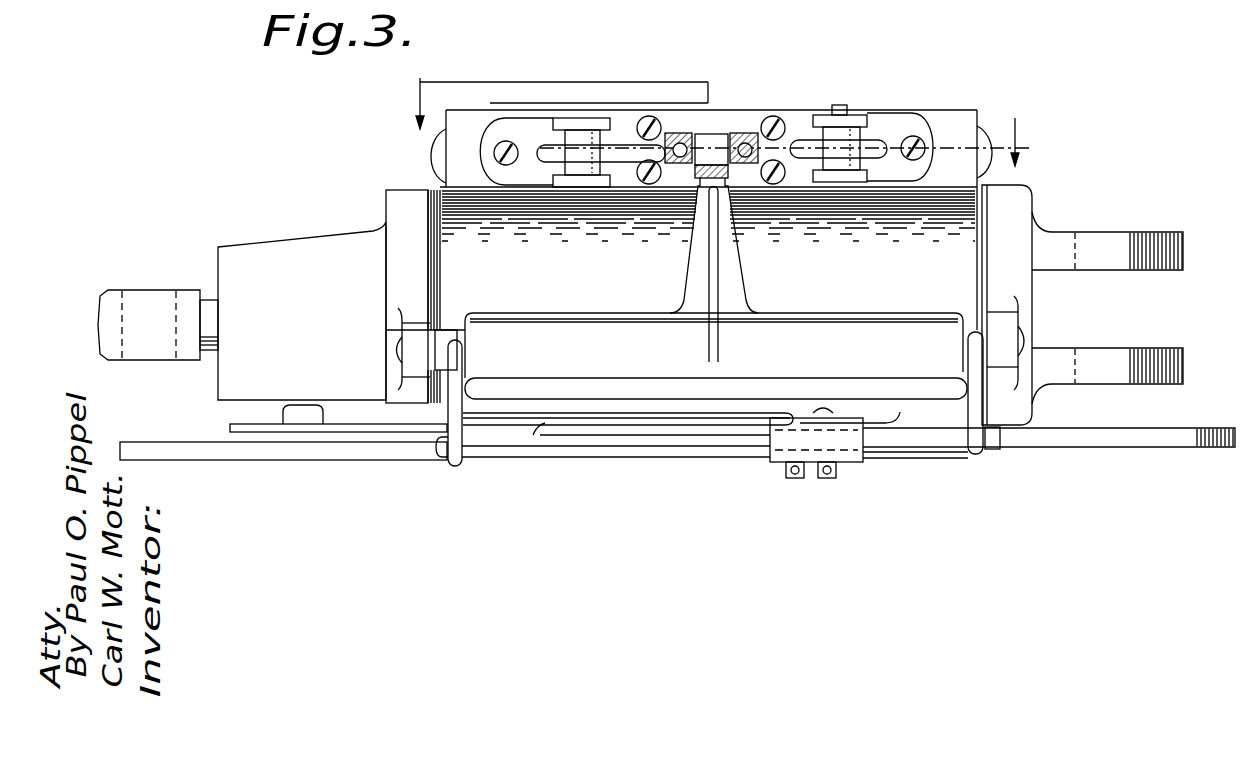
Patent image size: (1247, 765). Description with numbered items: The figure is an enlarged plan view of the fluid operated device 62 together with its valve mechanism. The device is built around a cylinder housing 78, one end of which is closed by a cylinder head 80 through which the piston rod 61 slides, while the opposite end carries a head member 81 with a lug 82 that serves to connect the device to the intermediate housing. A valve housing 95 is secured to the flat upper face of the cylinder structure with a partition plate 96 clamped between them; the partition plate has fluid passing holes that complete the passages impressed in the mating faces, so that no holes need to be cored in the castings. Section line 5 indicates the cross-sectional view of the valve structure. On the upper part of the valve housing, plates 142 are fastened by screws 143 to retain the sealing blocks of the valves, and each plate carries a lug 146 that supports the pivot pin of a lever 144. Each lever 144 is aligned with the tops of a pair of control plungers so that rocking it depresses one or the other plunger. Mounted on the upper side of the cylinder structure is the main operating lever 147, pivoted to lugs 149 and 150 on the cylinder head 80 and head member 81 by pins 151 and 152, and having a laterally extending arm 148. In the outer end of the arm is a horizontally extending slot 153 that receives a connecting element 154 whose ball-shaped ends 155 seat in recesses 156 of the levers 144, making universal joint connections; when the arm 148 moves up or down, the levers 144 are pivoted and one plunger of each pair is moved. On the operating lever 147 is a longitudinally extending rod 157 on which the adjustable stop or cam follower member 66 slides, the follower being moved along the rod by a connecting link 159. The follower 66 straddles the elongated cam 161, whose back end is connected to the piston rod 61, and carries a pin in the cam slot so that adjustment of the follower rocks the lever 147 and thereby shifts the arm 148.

The section line 5- 5 is at (717, 114).
The piston rod 61 is at (210, 295).
The fluid operated device 62 is at (242, 288).
The adjustable stop or cam follower member 66 is at (848, 462).
The cylinder housing 78 is at (473, 190).
The cylinder head 80 is at (308, 250).
The head member 81 is at (1034, 206).
The lug 82 is at (1147, 347).
The valve housing 95 is at (957, 107).
The partition plate 96 is at (487, 194).
The plate 142 is at (530, 121).
The screw 143 is at (505, 141).
The lever 144 is at (630, 140).
The lug 146 is at (583, 127).
The main operating lever 147 is at (808, 320).
The arm 148 is at (745, 262).
The lug 149 is at (400, 331).
The lug 150 is at (1012, 323).
The pin 151 is at (396, 347).
The pin 152 is at (1028, 340).
The slot 153 is at (720, 140).
The connecting element 154 is at (722, 145).
The ball-shaped ends 155 is at (745, 165).
The recess 156 is at (737, 145).
The rod 157 is at (590, 460).
The connecting link 159 is at (600, 410).
The cam 161 is at (1115, 449).